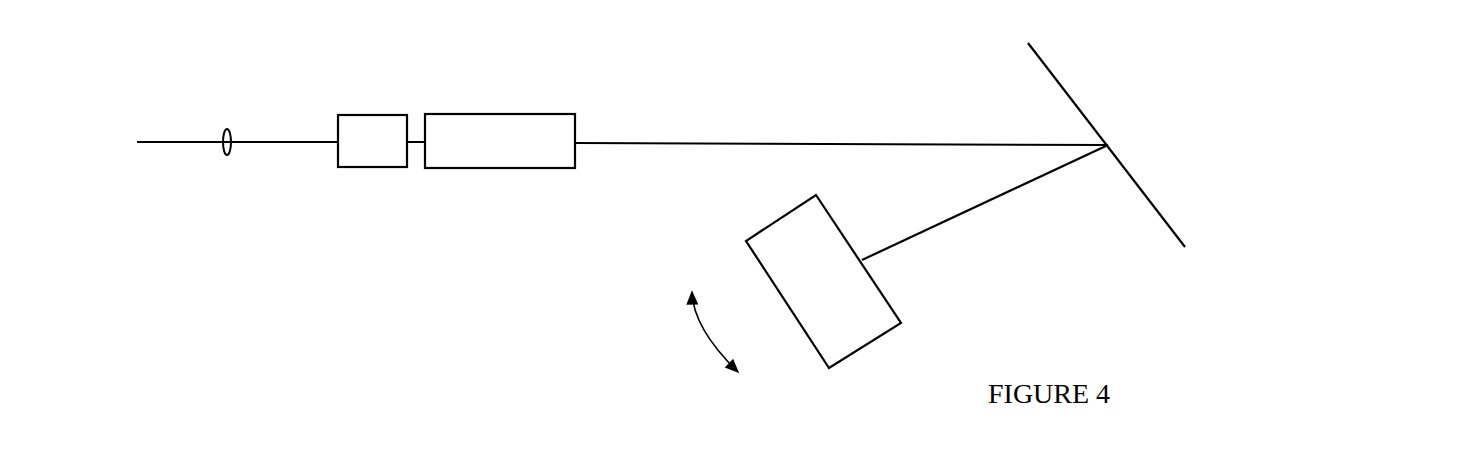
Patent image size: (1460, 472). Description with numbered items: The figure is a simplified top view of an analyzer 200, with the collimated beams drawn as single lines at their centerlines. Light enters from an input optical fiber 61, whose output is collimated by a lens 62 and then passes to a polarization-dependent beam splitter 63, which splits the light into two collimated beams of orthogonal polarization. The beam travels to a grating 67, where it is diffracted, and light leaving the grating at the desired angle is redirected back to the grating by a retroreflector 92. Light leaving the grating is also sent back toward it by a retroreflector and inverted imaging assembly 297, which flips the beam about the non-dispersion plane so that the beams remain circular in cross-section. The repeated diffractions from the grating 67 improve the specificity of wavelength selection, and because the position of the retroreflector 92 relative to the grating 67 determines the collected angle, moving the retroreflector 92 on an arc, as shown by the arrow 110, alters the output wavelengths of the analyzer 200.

The input optical fiber 61 is at (177, 143).
The lens 62 is at (227, 148).
The polarization-dependent beam splitter 63 is at (343, 163).
The retroreflector and inverted imaging assembly 297 is at (492, 163).
The grating 67 is at (1181, 233).
The retroreflector 92 is at (822, 342).
The arrow 110 is at (699, 332).
The analyzer 200 is at (1338, 140).